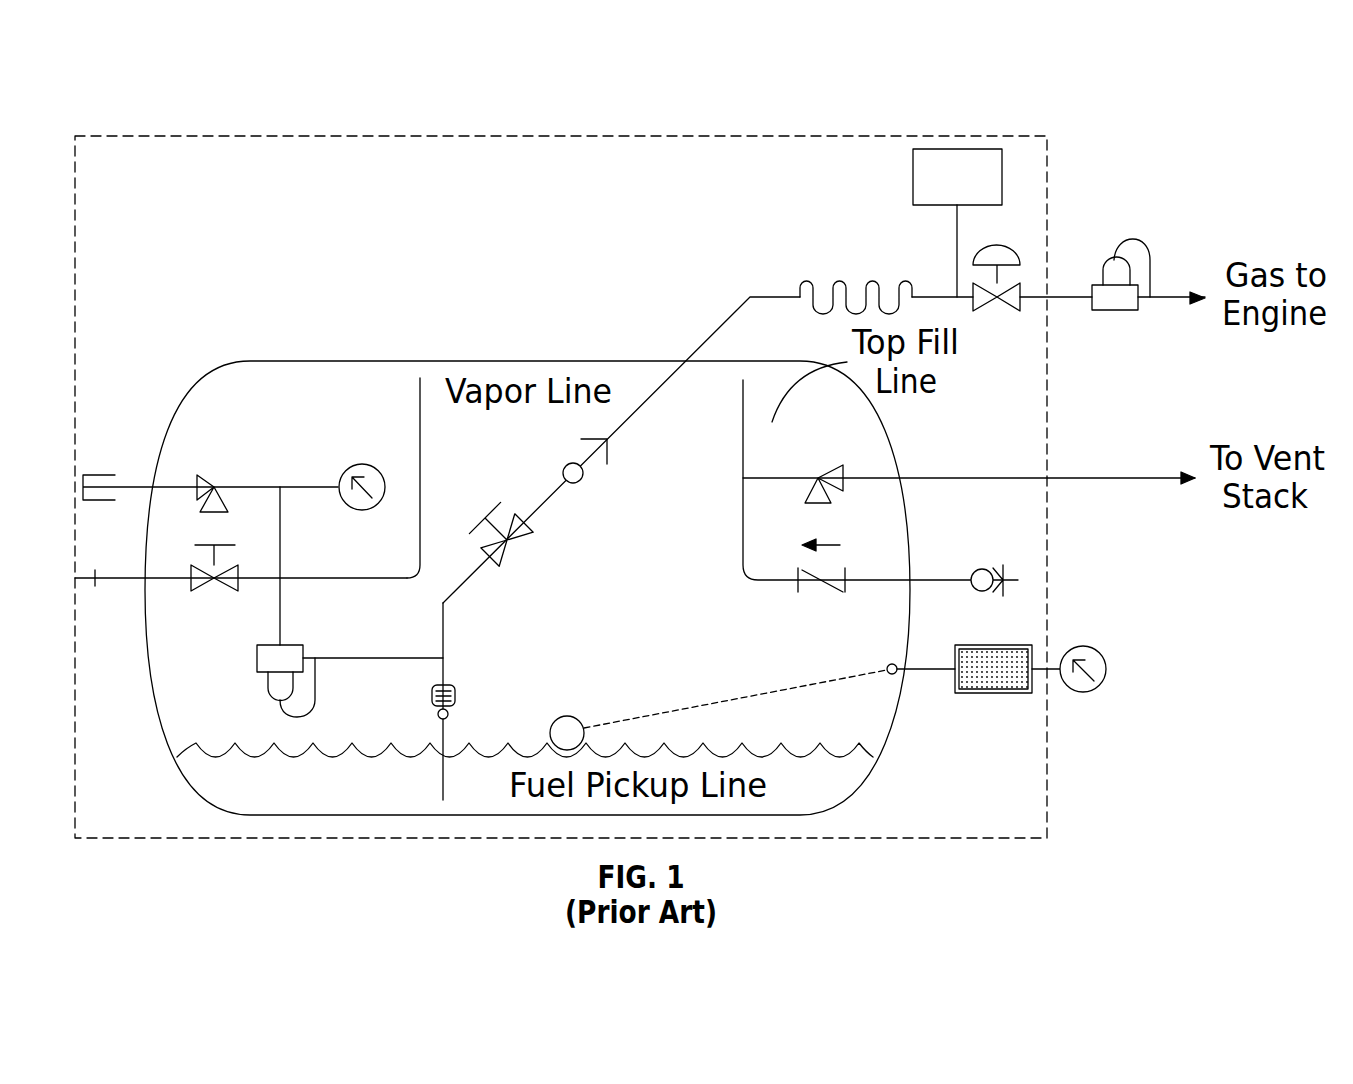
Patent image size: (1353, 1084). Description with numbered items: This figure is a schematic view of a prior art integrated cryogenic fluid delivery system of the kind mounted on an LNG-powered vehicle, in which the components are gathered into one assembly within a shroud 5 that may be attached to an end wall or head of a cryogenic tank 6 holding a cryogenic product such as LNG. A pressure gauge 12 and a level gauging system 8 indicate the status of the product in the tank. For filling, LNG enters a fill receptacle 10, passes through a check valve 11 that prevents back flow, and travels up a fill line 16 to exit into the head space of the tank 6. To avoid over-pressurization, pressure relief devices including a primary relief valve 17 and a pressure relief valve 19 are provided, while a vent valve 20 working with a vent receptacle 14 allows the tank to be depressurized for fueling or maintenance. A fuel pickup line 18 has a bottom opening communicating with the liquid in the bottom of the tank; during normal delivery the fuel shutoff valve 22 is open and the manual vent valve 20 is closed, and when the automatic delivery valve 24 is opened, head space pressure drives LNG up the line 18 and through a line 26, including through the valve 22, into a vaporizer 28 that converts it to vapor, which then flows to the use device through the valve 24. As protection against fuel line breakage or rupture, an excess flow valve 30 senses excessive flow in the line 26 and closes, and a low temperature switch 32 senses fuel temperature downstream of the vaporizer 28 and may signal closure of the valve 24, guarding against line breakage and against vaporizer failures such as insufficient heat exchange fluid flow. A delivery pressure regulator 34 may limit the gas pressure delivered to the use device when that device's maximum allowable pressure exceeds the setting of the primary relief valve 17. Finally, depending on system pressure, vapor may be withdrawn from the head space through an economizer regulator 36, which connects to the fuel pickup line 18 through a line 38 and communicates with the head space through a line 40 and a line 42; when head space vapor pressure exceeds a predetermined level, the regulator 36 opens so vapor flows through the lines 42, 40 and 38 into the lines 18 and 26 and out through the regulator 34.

The shroud 5 is at (527, 134).
The cryogenic tank 6 is at (315, 361).
The level gauging system 8 is at (993, 693).
The fill receptacle 10 is at (985, 569).
The check valve 11 is at (820, 588).
The pressure gauge 12 is at (358, 465).
The vent receptacle 14 is at (95, 580).
The fill line 16 is at (740, 447).
The primary relief valve 17 is at (815, 478).
The fuel pickup line 18 is at (452, 730).
The pressure relief valve 19 is at (217, 487).
The vent valve 20 is at (216, 590).
The fuel shutoff valve 22 is at (508, 555).
The automatic delivery valve 24 is at (1023, 290).
The line 26 is at (648, 402).
The vaporizer 28 is at (840, 282).
The excess flow valve 30 is at (590, 452).
The low temperature switch 32 is at (957, 149).
The delivery pressure regulator 34 is at (1117, 310).
The economizer regulator 36 is at (257, 660).
The line 38 is at (390, 655).
The line 40 is at (287, 617).
The line 42 is at (422, 462).